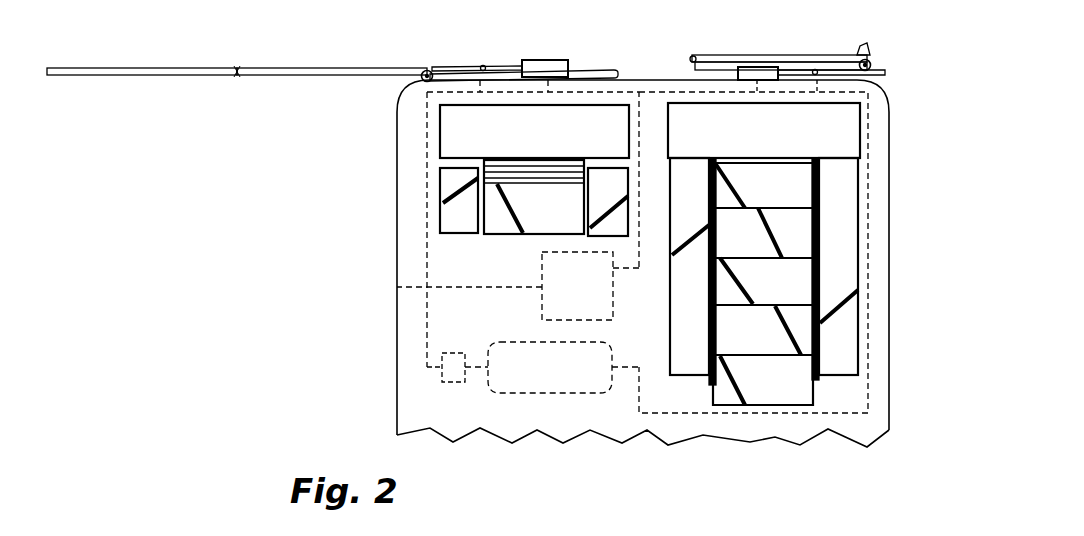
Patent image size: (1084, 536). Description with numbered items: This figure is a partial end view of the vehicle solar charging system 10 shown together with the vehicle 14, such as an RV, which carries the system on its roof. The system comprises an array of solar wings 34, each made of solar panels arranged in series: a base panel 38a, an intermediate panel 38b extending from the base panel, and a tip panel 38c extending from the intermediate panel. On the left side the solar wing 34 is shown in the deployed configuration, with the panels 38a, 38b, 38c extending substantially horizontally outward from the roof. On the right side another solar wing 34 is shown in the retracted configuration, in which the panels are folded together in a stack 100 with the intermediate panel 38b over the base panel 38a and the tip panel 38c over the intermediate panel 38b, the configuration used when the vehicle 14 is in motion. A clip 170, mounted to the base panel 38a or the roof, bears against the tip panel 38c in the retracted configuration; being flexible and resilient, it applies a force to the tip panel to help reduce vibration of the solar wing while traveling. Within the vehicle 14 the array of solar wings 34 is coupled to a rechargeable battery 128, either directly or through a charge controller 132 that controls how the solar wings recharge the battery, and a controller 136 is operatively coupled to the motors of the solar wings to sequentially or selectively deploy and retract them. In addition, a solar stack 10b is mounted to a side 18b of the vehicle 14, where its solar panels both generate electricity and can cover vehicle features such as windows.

The vehicle solar charging system 10 is at (128, 117).
The solar stack 10b is at (845, 142).
The vehicle 14 is at (890, 430).
The side of the vehicle 18b is at (878, 385).
The solar wing 34 is at (412, 30).
The base panel 38a is at (585, 72).
The intermediate panel 38b is at (310, 68).
The tip panel 38c is at (132, 68).
The stack 100 is at (865, 18).
The clip 170 is at (868, 45).
The rechargeable battery 128 is at (490, 344).
The charge controller 132 is at (442, 382).
The controller 136 is at (397, 287).